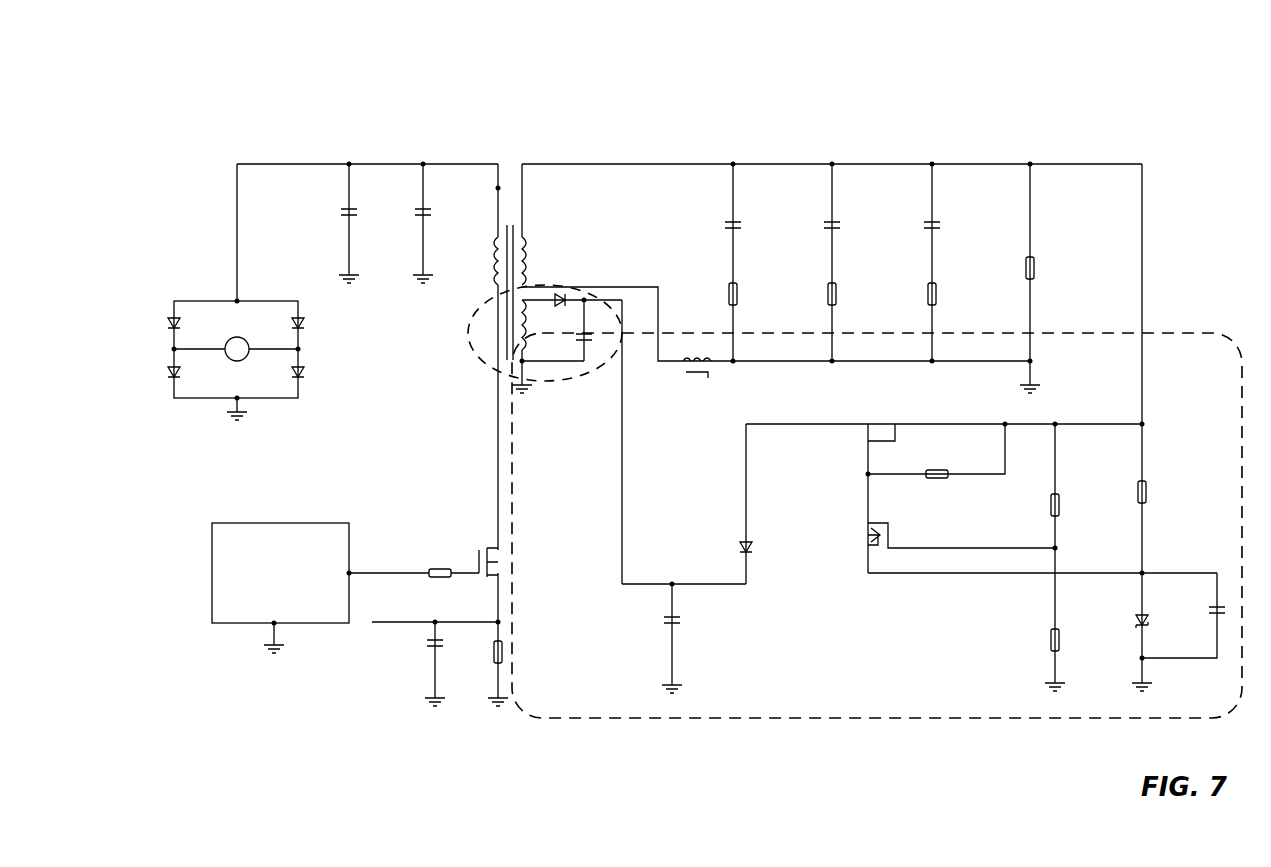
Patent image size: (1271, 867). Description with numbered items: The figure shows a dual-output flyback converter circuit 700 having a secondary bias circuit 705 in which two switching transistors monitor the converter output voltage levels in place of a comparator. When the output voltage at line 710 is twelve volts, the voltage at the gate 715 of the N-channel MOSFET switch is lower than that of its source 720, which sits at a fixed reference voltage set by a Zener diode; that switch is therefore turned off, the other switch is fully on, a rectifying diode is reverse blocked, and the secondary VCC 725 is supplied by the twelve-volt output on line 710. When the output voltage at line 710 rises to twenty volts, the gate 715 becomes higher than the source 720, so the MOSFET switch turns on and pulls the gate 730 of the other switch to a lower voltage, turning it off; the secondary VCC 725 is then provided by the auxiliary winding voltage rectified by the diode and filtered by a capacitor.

The flyback converter circuit 700 is at (252, 94).
The secondary bias circuit 705 is at (597, 722).
The output voltage line 710 is at (1117, 158).
The gate of switch Q5 715 is at (960, 548).
The source of switch Q5 720 is at (930, 573).
The secondary VCC 725 is at (683, 578).
The gate of switch Q3 730 is at (860, 464).